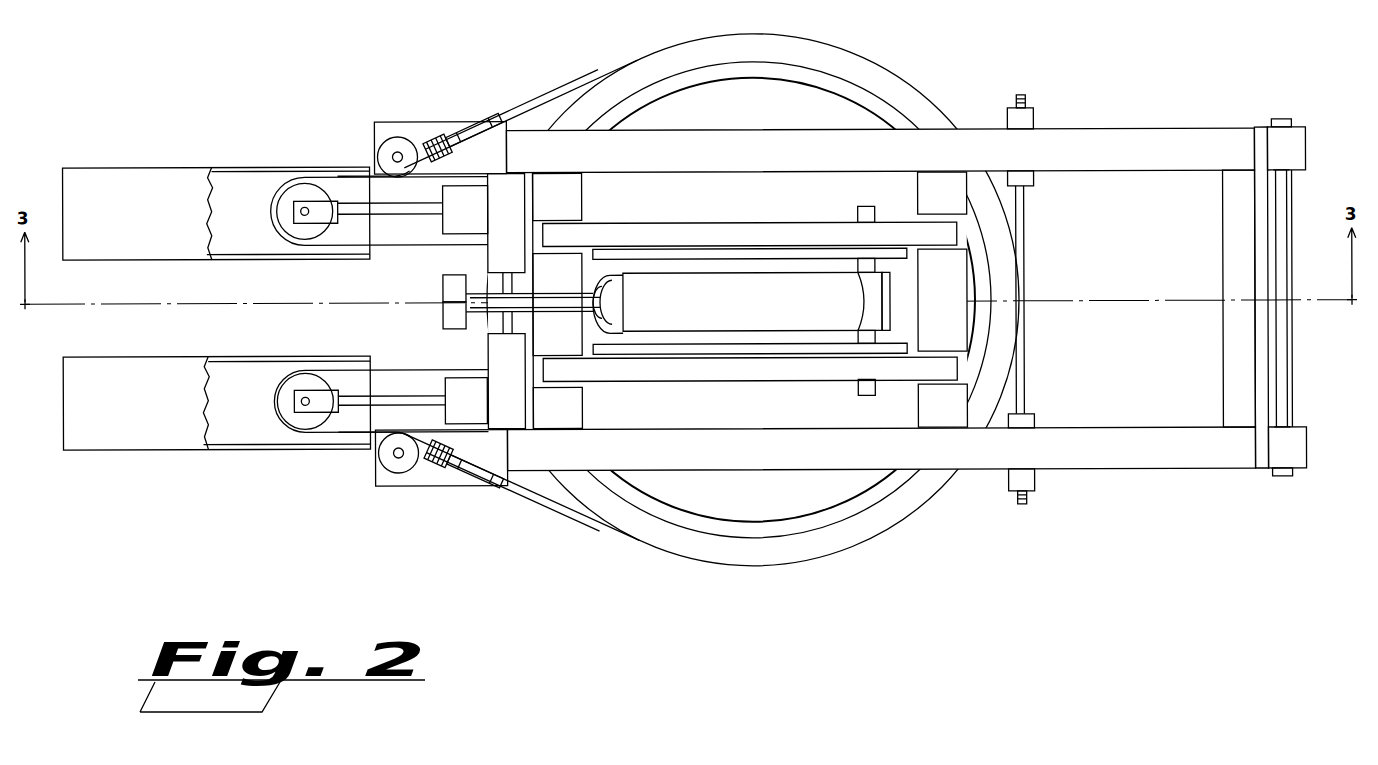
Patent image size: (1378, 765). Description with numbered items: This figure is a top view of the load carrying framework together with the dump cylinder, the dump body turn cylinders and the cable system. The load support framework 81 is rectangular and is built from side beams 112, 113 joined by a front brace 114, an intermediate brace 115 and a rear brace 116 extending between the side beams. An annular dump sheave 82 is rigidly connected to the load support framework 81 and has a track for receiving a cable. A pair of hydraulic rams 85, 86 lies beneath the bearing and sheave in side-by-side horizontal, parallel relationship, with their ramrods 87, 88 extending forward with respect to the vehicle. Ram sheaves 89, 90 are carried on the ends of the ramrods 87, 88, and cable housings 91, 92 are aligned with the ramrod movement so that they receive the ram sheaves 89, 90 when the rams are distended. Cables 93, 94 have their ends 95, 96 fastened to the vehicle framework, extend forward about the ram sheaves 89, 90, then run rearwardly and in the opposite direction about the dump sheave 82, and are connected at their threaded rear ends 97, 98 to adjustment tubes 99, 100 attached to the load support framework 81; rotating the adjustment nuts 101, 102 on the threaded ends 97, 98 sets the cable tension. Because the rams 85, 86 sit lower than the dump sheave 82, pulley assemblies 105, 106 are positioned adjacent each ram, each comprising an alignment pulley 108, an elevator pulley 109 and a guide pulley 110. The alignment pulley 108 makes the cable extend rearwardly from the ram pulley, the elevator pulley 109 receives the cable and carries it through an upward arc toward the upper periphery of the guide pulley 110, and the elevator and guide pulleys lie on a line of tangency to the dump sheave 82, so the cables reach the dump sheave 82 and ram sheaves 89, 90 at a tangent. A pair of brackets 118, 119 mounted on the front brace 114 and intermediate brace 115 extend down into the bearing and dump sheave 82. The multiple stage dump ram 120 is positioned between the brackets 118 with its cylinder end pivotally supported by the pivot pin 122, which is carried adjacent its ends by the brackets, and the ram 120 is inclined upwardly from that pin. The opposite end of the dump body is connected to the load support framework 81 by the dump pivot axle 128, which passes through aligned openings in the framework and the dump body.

The load support framework 81 is at (1236, 130).
The annular dump sheave 82 is at (755, 566).
The hydraulic ram 85 is at (458, 386).
The hydraulic ram 86 is at (458, 222).
The ramrod 87 is at (354, 392).
The ramrod 88 is at (358, 222).
The ram sheave 89 is at (307, 422).
The ram sheave 90 is at (306, 187).
The cable housing 91 is at (158, 430).
The cable housing 92 is at (173, 166).
The cable 93 is at (394, 368).
The cable 94 is at (364, 244).
The cable end 95 is at (472, 332).
The cable end 96 is at (472, 272).
The threaded rear end of cable 97 is at (1025, 221).
The threaded rear end of cable 98 is at (1025, 389).
The adjustment tube 99 is at (1036, 421).
The adjustment tube 100 is at (1036, 181).
The adjustment nut 101 is at (1036, 485).
The adjustment nut 102 is at (1036, 116).
The pulley assembly 105 is at (457, 504).
The pulley assembly 106 is at (460, 115).
The alignment pulley 108 is at (393, 150).
The elevator pulley 109 is at (438, 152).
The guide pulley 110 is at (507, 130).
The side beam 112 is at (1122, 140).
The side beam 113 is at (1185, 472).
The front brace 114 is at (512, 192).
The intermediate brace 115 is at (920, 190).
The rear brace 116 is at (1222, 220).
The bracket 118 is at (818, 232).
The bracket 119 is at (772, 372).
The dump ram 120 is at (740, 271).
The pivot pin 122 is at (876, 396).
The dump pivot axle 128 is at (1290, 358).